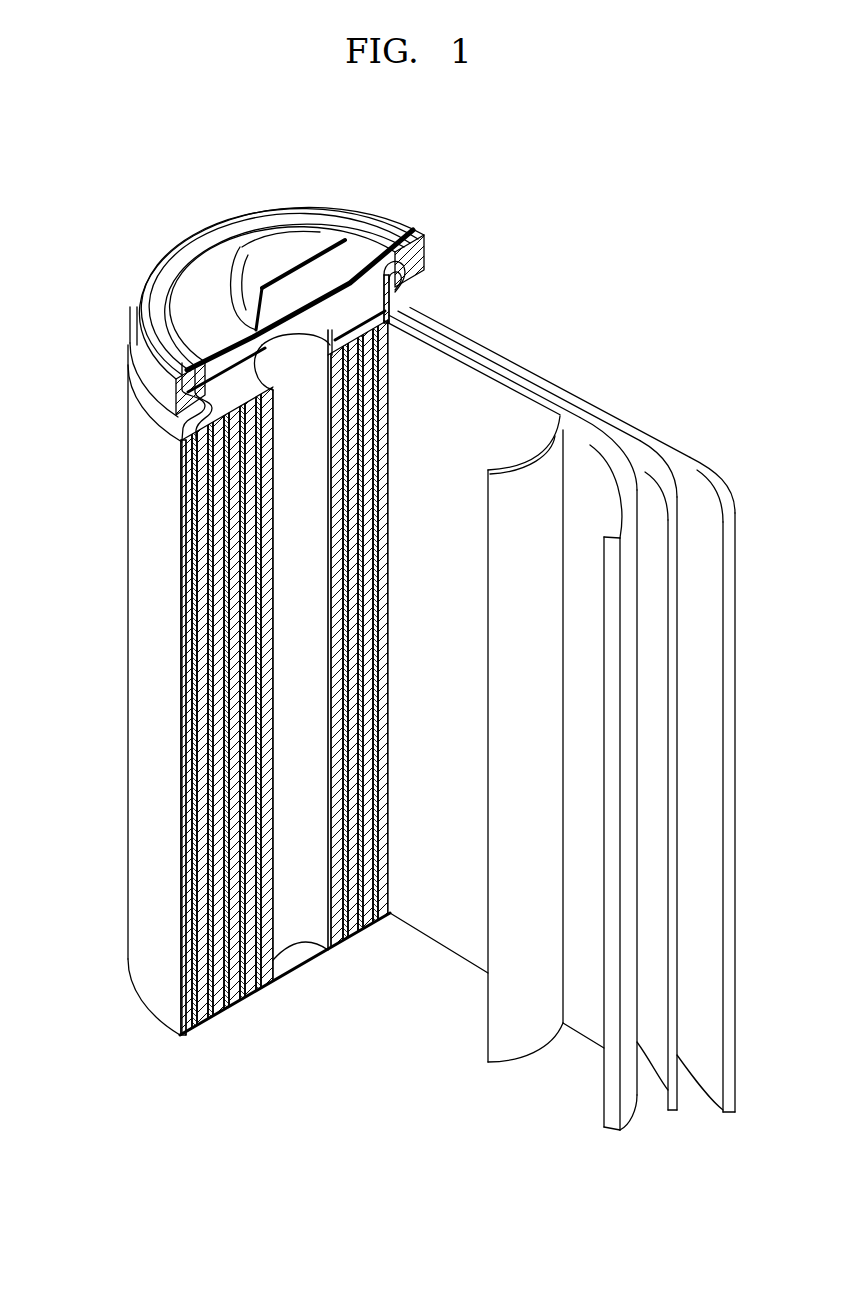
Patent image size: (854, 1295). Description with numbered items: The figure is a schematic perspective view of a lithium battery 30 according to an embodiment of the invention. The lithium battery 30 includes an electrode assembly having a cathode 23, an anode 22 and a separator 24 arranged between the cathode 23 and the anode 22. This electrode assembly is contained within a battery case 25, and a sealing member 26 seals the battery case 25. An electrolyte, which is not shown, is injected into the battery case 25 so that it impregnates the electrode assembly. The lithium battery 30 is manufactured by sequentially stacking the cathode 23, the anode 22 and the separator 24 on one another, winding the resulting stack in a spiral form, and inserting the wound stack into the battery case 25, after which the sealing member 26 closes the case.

The lithium battery 30 is at (366, 134).
The anode 22 is at (707, 482).
The cathode 23 is at (622, 492).
The separator 24 is at (527, 477).
The battery case 25 is at (135, 668).
The sealing member 26 is at (268, 250).